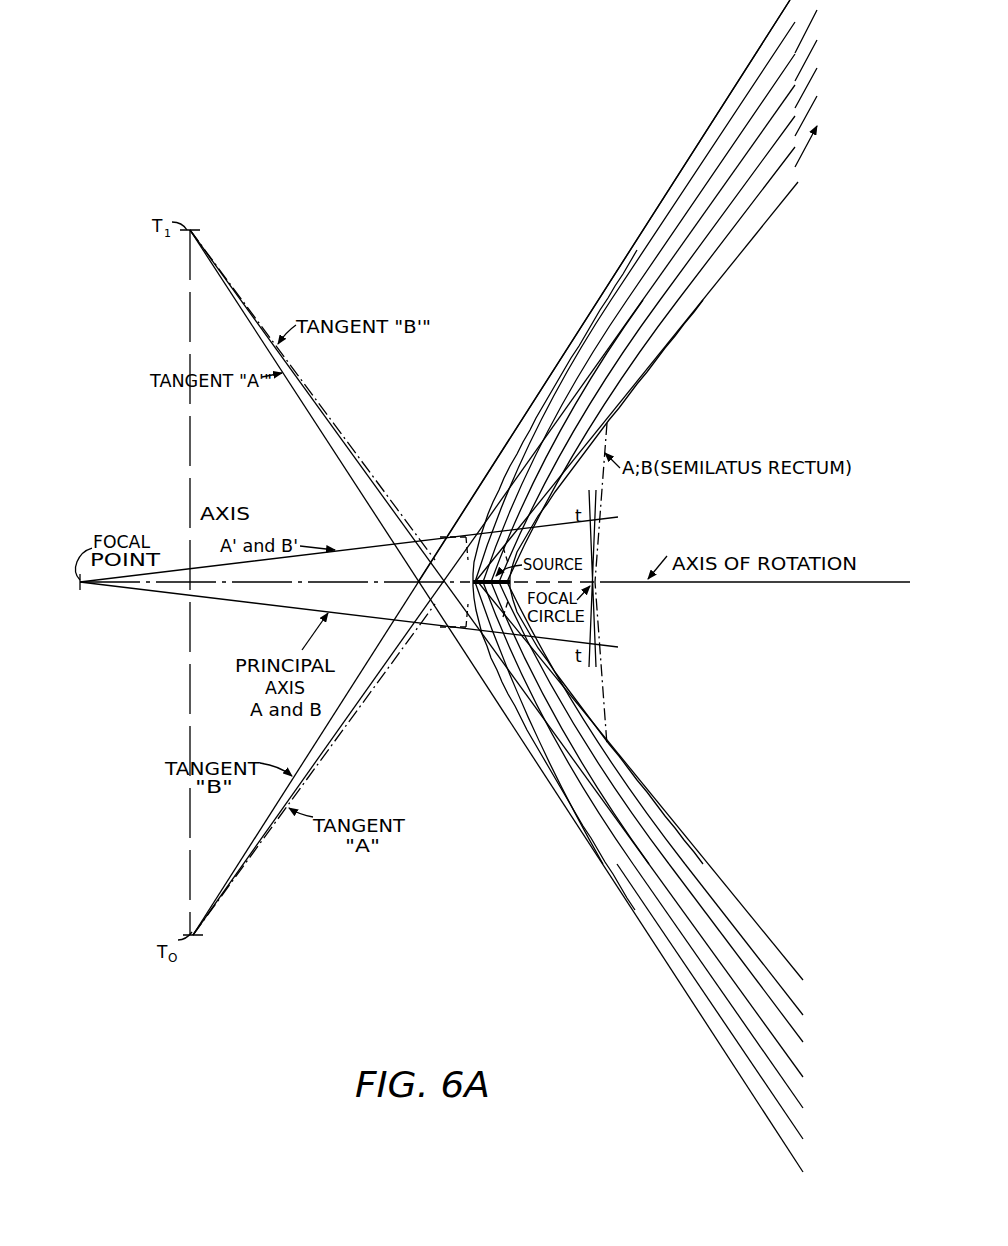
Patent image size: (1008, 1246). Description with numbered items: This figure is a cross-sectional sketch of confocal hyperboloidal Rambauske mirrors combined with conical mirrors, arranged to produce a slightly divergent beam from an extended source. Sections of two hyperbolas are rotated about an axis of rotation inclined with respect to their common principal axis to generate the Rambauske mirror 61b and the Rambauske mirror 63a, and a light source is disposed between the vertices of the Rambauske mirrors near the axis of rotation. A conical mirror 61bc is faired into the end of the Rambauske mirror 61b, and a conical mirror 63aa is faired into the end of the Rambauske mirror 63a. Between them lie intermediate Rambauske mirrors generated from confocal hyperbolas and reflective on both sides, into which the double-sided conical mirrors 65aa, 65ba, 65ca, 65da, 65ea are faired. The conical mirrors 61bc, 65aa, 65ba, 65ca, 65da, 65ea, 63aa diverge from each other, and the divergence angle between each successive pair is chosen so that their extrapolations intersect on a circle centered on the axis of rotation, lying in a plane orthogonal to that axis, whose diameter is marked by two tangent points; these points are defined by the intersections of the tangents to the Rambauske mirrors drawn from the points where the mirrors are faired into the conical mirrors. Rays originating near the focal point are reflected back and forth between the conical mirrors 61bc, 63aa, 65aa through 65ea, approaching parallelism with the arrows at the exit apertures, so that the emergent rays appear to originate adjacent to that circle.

The Rambauske mirror 61b is at (503, 480).
The Rambauske mirror 63a is at (580, 457).
The conical mirror 61bc is at (633, 248).
The conical mirror 63aa is at (795, 183).
The conical mirror 65aa is at (652, 245).
The conical mirror 65ba is at (680, 230).
The conical mirror 65ca is at (712, 203).
The conical mirror 65da is at (750, 182).
The conical mirror 65ea is at (782, 162).